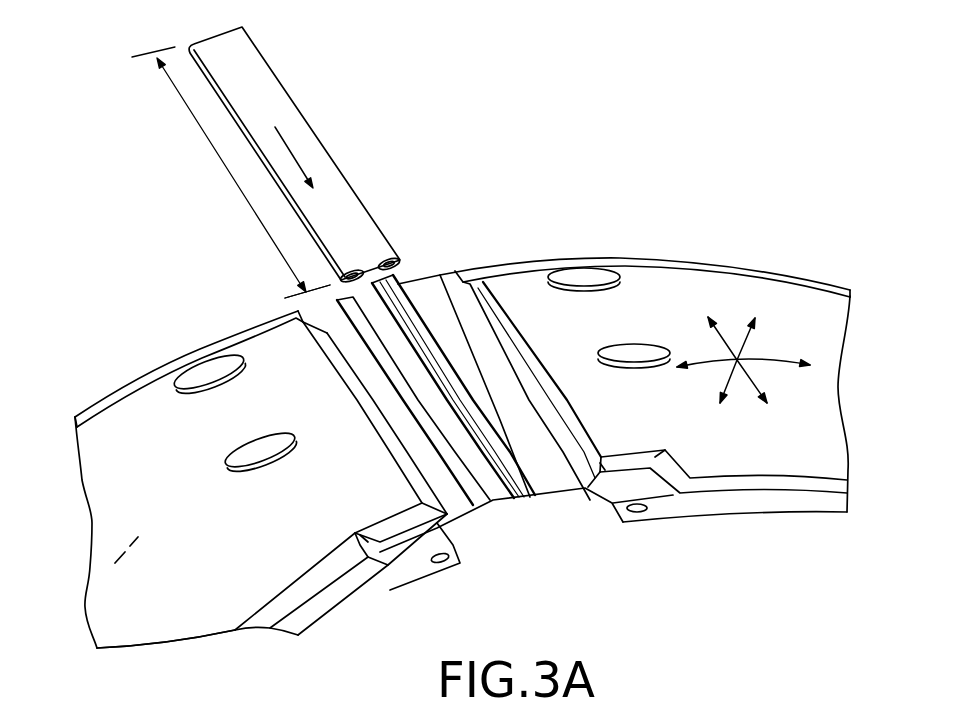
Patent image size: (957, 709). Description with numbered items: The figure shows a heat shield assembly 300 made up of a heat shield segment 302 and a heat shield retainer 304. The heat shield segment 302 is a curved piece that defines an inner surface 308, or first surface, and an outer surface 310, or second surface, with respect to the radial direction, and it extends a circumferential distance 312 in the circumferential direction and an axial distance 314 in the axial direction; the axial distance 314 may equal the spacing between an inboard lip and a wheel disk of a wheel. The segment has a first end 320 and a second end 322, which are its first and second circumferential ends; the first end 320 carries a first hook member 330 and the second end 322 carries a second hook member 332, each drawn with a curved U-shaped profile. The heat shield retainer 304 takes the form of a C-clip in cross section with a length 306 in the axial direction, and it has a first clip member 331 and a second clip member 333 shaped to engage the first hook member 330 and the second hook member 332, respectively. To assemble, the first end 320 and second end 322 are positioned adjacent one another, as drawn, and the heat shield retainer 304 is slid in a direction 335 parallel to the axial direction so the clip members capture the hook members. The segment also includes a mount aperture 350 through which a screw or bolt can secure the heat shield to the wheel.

The heat shield assembly 300 is at (152, 172).
The heat shield segment 302 is at (105, 482).
The heat shield retainer 304 is at (273, 90).
The length 306 is at (235, 186).
The inner surface 308 is at (100, 565).
The outer surface 310 is at (130, 612).
The circumferential distance 312 is at (773, 363).
The axial distance 314 is at (716, 340).
The first end 320 is at (457, 510).
The second end 322 is at (558, 482).
The first hook member 330 is at (497, 497).
The first clip member 331 is at (287, 260).
The second hook member 332 is at (527, 487).
The second clip member 333 is at (396, 250).
The direction 335 is at (285, 152).
The mount aperture 350 is at (432, 562).